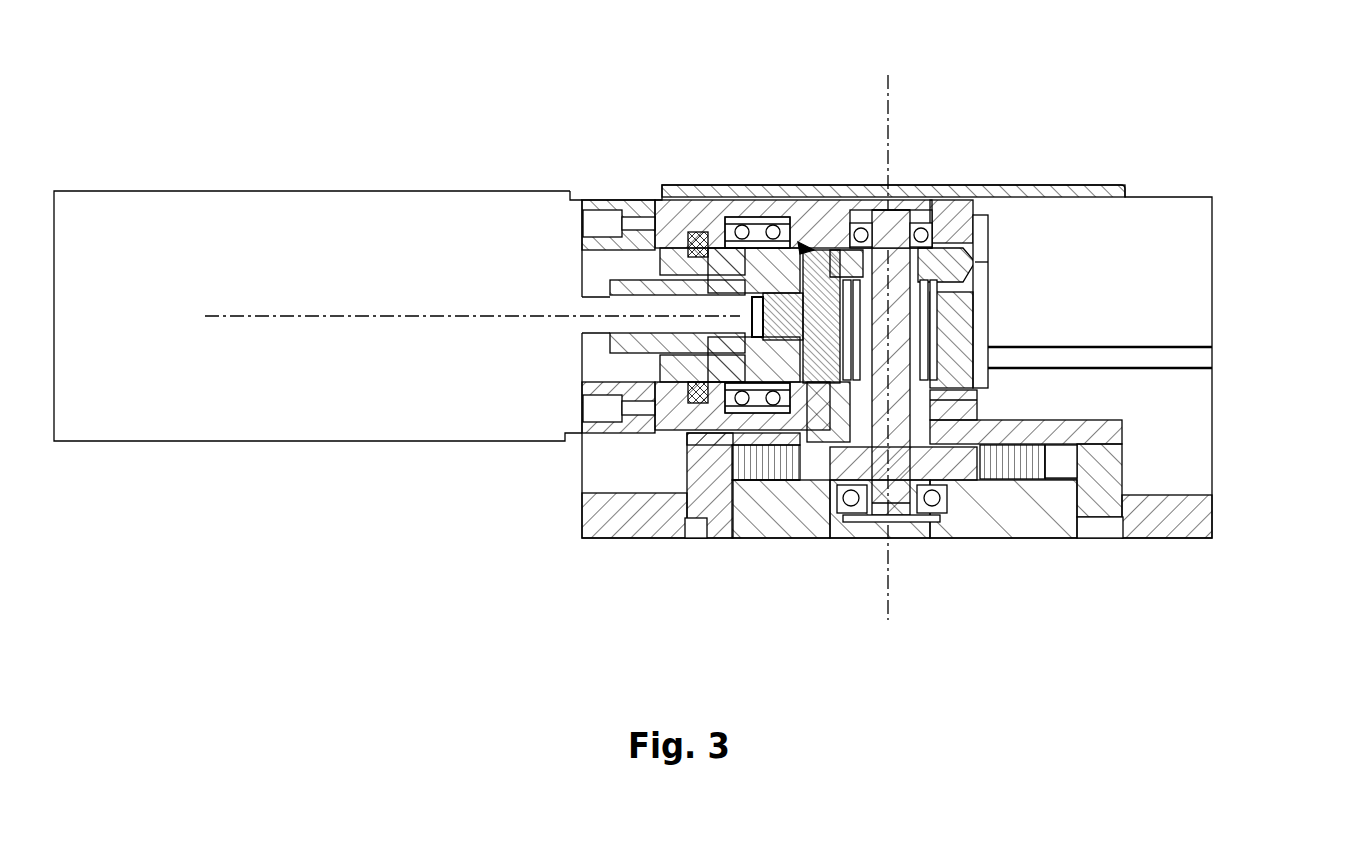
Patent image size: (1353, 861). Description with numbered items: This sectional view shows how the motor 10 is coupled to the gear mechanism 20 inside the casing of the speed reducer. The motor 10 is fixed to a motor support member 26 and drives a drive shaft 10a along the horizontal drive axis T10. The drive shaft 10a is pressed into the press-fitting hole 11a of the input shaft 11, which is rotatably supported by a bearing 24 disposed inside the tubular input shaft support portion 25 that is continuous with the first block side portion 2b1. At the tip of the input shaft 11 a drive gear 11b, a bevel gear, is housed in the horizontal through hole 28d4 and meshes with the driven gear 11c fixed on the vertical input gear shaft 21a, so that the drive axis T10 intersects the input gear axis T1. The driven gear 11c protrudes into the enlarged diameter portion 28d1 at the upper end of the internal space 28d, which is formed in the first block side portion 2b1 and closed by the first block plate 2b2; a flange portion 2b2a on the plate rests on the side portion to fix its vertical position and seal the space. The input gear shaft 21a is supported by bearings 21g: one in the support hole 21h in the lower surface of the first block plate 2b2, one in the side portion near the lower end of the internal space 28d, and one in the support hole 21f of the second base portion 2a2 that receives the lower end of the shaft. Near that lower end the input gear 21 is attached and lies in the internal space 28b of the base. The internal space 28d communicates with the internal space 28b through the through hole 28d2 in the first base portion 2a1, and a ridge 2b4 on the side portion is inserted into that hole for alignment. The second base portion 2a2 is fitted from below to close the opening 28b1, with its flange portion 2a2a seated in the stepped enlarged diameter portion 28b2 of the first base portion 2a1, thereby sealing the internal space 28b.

The motor 10 is at (265, 441).
The drive shaft 10a is at (597, 345).
The drive axis T10 is at (380, 312).
The input gear axis T1 is at (890, 92).
The gear mechanism 20 is at (921, 664).
The input gear 21 is at (837, 540).
The input gear shaft 21a is at (908, 540).
The support hole 21f is at (867, 540).
The bearing 21g is at (920, 199).
The support hole 21h is at (868, 199).
The bearing 24 is at (754, 540).
The input shaft support portion 25 is at (746, 199).
The motor support member 26 is at (612, 199).
The input shaft 11 is at (806, 240).
The press-fitting hole 11a is at (653, 435).
The drive gear 11b is at (811, 246).
The driven gear 11c is at (1053, 198).
The first base portion 2a1 is at (1212, 522).
The second base portion 2a2 is at (1050, 500).
The flange portion 2a2a is at (1075, 520).
The first block side portion 2b1 is at (990, 298).
The first block plate 2b2 is at (955, 199).
The flange portion 2b2a is at (1007, 199).
The ridge 2b4 is at (977, 398).
The internal space 28b is at (1050, 485).
The opening 28b1 is at (738, 485).
The enlarged diameter portion 28b2 is at (1088, 527).
The internal space 28d is at (920, 318).
The enlarged diameter portion 28d1 is at (985, 290).
The through hole 28d2 is at (937, 402).
The through hole 28d4 is at (800, 442).